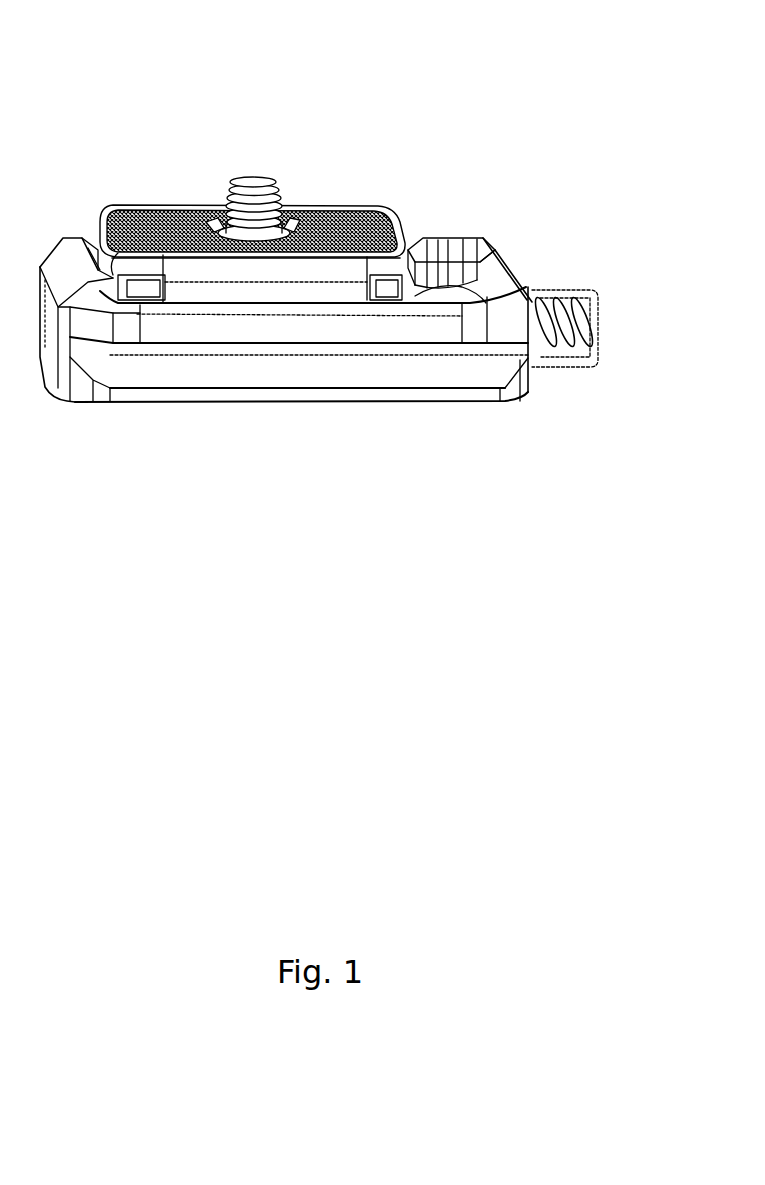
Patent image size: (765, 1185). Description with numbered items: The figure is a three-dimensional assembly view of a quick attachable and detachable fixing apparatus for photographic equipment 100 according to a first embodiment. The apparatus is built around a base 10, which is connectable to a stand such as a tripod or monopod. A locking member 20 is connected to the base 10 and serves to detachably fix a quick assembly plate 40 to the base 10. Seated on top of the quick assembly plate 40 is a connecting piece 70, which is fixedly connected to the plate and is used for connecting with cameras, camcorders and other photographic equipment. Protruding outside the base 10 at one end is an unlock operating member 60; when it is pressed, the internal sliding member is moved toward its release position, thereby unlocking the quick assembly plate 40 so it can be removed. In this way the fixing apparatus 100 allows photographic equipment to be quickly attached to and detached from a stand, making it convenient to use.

The quick attachable and detachable fixing apparatus for photographic equipment 100 is at (326, 44).
The base 10 is at (505, 266).
The locking member 20 is at (440, 246).
The quick assembly plate 40 is at (330, 210).
The unlock operating member 60 is at (585, 322).
The connecting piece 70 is at (262, 185).